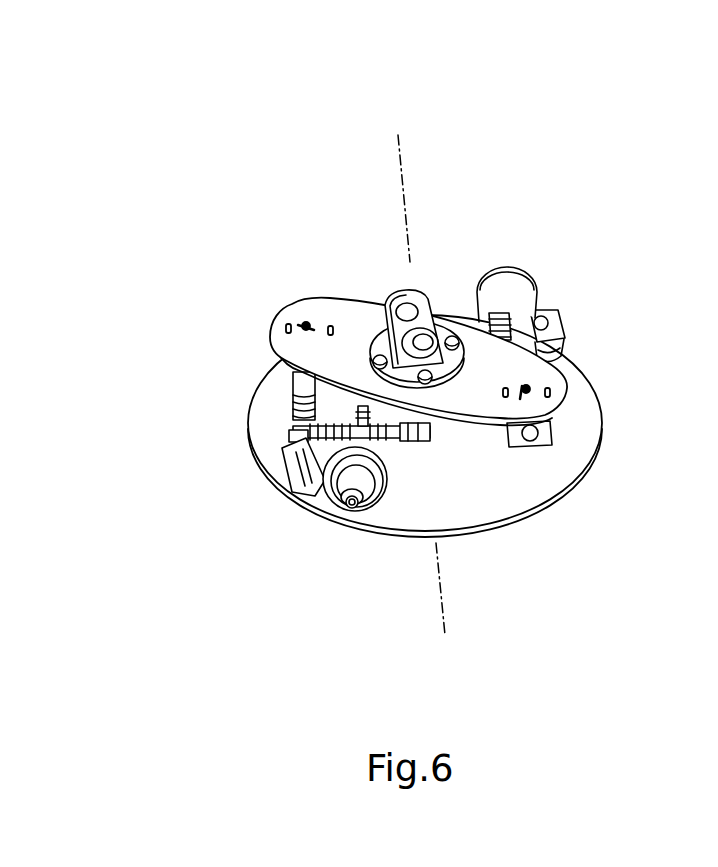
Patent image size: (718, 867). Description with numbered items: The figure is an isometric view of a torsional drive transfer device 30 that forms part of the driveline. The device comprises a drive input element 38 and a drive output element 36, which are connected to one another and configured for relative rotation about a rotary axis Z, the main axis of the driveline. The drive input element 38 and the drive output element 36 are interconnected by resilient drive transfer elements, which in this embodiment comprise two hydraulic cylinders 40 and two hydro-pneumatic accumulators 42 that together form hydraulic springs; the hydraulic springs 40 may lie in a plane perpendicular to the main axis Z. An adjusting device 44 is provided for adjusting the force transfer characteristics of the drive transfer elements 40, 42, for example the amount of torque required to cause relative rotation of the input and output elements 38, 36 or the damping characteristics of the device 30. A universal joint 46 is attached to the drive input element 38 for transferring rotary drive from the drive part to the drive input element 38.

The torsional drive transfer device 30 is at (465, 207).
The drive output element 36 is at (492, 487).
The drive input element 38 is at (532, 403).
The hydraulic cylinders 40 is at (303, 385).
The hydro-pneumatic accumulators 42 is at (343, 497).
The adjusting device 44 is at (333, 445).
The universal joint 46 is at (383, 287).
The rotary axis Z is at (398, 165).